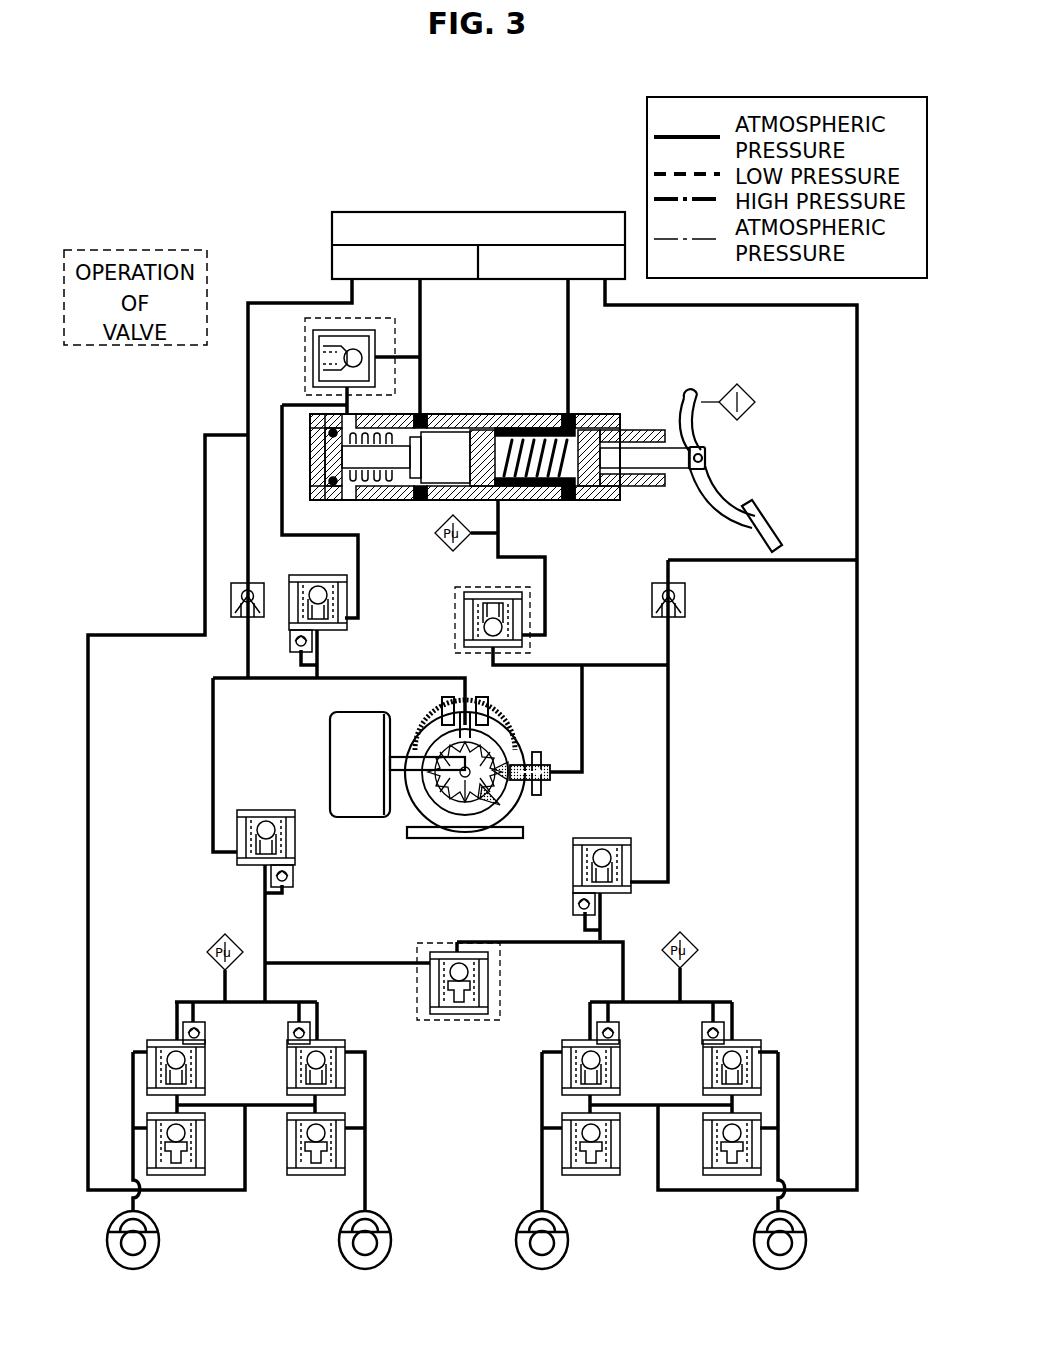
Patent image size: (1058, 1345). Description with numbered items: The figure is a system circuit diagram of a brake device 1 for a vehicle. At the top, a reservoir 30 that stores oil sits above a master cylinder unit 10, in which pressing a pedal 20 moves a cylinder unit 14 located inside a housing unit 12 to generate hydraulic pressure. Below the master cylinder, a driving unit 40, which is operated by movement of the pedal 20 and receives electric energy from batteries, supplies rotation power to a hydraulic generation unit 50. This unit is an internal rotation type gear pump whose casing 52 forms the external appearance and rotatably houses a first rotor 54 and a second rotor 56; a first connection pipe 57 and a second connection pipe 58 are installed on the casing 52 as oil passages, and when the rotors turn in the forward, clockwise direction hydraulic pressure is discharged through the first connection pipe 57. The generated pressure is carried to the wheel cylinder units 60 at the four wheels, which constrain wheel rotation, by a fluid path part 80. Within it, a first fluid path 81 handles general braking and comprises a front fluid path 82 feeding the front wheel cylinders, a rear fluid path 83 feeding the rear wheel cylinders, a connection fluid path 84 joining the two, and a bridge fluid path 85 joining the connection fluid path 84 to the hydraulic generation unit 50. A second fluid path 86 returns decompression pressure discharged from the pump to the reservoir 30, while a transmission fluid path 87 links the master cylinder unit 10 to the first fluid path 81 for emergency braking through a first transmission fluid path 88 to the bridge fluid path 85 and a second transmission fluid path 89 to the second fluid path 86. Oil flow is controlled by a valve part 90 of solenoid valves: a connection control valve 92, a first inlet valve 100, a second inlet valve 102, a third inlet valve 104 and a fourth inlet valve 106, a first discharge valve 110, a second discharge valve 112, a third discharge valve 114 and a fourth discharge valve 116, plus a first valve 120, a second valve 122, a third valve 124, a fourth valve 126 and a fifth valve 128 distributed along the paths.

The brake device 1 is at (583, 135).
The master cylinder unit 10 is at (500, 444).
The housing unit 12 is at (455, 414).
The cylinder unit 14 is at (612, 469).
The pedal 20 is at (725, 500).
The reservoir 30 is at (418, 212).
The driving unit 40 is at (328, 765).
The hydraulic generation unit 50 is at (506, 771).
The casing 52 is at (430, 830).
The first rotor 54 is at (470, 820).
The second rotor 56 is at (525, 806).
The first connection pipe 57 is at (548, 750).
The second connection pipe 58 is at (450, 700).
The wheel cylinder unit 60 is at (832, 1264).
The fluid path part 80 is at (878, 866).
The first fluid path 81 is at (752, 1015).
The front fluid path 82 is at (700, 1002).
The rear fluid path 83 is at (280, 1002).
The connection fluid path 84 is at (385, 965).
The bridge fluid path 85 is at (668, 740).
The second fluid path 86 is at (282, 468).
The transmission fluid path 87 is at (272, 503).
The first transmission fluid path 88 is at (545, 567).
The second transmission fluid path 89 is at (358, 552).
The valve part 90 is at (482, 1038).
The connection control valve 92 is at (488, 978).
The first inlet valve 100 is at (760, 1075).
The second inlet valve 102 is at (618, 1075).
The third inlet valve 104 is at (345, 1080).
The fourth inlet valve 106 is at (147, 1072).
The first discharge valve 110 is at (762, 1145).
The second discharge valve 112 is at (600, 1175).
The third discharge valve 114 is at (298, 1175).
The fourth discharge valve 116 is at (147, 1145).
The first valve 120 is at (340, 335).
The second valve 122 is at (290, 625).
The third valve 124 is at (520, 615).
The fourth valve 126 is at (237, 830).
The fifth valve 128 is at (630, 855).